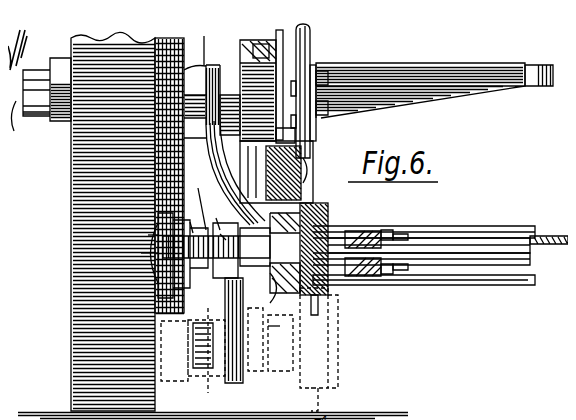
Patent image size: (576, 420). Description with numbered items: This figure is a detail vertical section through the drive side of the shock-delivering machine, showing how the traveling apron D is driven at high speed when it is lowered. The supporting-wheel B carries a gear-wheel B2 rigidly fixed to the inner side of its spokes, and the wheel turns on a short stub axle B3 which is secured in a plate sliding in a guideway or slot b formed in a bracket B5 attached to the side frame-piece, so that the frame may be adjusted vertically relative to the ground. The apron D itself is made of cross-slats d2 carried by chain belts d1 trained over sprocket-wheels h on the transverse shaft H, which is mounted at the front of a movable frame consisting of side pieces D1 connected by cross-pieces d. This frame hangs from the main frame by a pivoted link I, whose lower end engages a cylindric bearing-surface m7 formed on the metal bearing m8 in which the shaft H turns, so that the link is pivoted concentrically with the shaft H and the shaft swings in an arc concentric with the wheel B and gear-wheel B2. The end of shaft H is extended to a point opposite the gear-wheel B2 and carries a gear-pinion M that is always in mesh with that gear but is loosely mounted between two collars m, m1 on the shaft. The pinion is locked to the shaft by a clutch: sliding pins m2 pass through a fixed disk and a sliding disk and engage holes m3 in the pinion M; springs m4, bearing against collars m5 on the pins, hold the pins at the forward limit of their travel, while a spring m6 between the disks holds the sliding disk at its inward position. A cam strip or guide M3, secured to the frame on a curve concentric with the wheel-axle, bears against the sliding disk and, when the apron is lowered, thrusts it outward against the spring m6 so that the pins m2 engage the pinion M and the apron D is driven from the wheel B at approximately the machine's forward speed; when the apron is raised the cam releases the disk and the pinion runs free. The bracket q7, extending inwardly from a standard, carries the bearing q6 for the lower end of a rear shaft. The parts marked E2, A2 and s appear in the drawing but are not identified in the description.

The supporting-wheel B is at (113, 221).
The stub axle B3 is at (41, 104).
The bracket B5 is at (240, 56).
The guideway or slot b is at (261, 39).
The plate E2 is at (302, 33).
The inwardly-extending bracket q7 is at (388, 80).
The bearing q6 is at (527, 58).
The housing A2 is at (302, 142).
The pivoted link I is at (207, 152).
The shaft axis s is at (203, 211).
The spring m6 is at (299, 249).
The traveling platform or apron D is at (438, 220).
The forward transverse shaft H is at (470, 240).
The cross-piece d is at (543, 237).
The side piece of apron-frame D1 is at (345, 220).
The sprocket-wheel h is at (378, 221).
The chain belt d1 is at (395, 225).
The cross-slat d2 is at (512, 222).
The gear-pinion M is at (150, 277).
The collar m is at (180, 362).
The collar on pin m5 is at (139, 254).
The hole in gear-pinion m3 is at (202, 238).
The collar m1 is at (196, 219).
The sliding pin m2 is at (239, 257).
The spring m4 is at (218, 263).
The cylindric bearing-surface m7 is at (275, 295).
The metal bearing m8 is at (284, 325).
The cam strip or guide M3 is at (218, 372).
The gear-wheel B2 is at (249, 349).